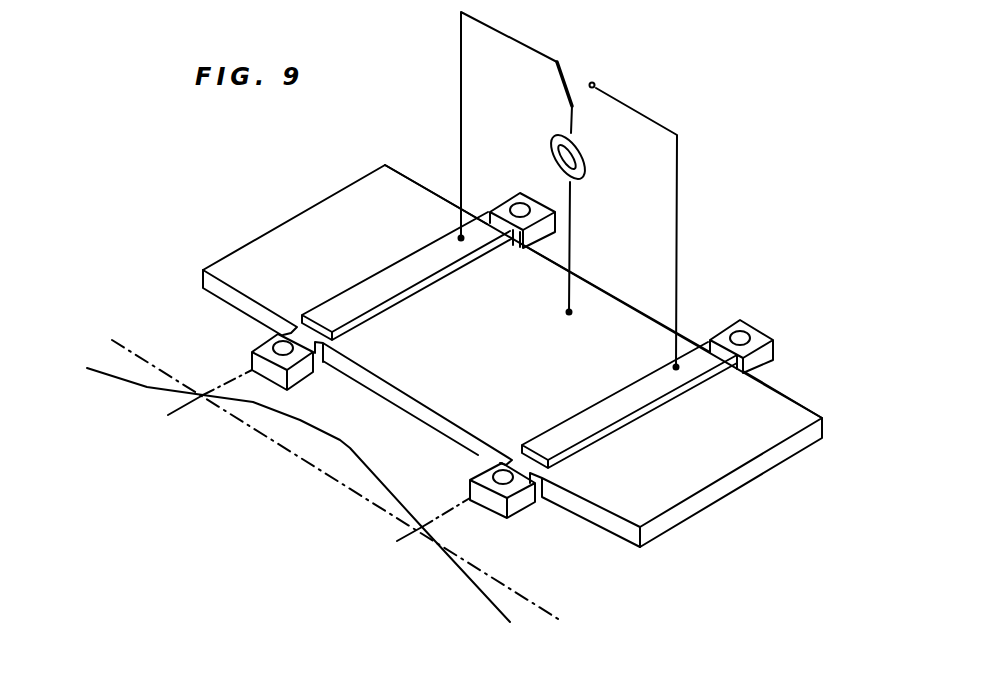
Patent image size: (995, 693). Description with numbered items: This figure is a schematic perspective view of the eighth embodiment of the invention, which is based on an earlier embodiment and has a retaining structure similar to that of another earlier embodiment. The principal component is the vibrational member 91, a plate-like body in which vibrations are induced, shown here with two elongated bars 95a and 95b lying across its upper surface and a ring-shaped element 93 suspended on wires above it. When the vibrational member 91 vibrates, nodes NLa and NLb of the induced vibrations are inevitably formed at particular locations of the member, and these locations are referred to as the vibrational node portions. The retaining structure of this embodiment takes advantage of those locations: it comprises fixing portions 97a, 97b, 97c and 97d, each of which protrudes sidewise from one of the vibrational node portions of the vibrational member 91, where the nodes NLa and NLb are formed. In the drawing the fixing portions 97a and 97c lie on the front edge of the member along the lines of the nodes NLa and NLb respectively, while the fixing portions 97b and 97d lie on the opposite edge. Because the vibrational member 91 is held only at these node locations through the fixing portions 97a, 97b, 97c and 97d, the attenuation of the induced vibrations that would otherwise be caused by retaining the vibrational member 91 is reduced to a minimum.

The vibrational member 91 is at (322, 228).
The ring 93 is at (588, 156).
The bar 95a is at (402, 280).
The bar 95b is at (612, 403).
The fixing portion 97a is at (255, 347).
The fixing portion 97b is at (513, 193).
The fixing portion 97c is at (520, 500).
The fixing portion 97d is at (758, 338).
The node NLa is at (192, 407).
The node NLb is at (409, 534).